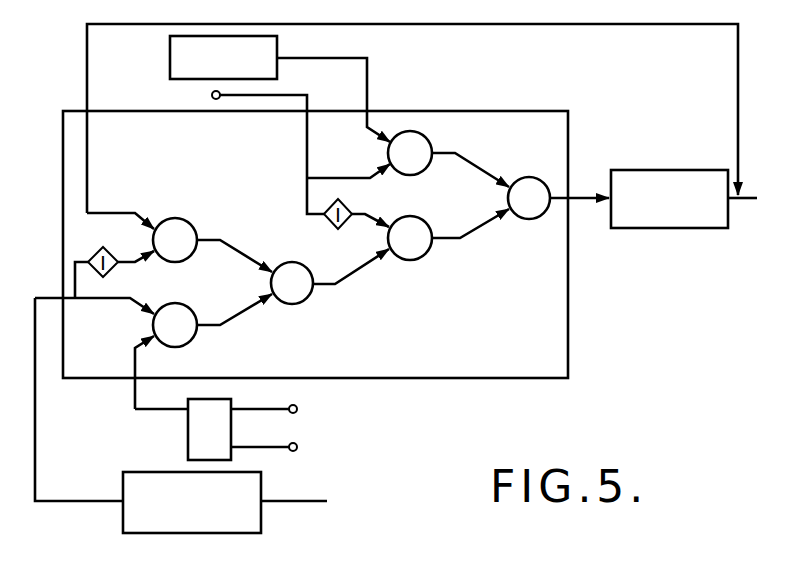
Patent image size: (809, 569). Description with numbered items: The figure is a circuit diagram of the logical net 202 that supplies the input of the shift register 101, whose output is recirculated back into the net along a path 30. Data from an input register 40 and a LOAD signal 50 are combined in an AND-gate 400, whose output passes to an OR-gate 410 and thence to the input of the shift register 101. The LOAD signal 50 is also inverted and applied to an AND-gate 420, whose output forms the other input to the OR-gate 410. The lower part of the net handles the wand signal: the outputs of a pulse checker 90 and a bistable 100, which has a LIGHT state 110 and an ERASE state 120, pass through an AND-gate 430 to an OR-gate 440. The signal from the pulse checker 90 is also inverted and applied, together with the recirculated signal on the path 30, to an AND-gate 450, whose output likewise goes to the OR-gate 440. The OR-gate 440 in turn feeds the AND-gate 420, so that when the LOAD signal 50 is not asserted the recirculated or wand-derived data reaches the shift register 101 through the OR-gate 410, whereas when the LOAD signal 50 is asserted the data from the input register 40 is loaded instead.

The path 30 is at (86, 70).
The input register 40 is at (170, 41).
The LOAD signal 50 is at (222, 92).
The pulse checker 90 is at (123, 512).
The bistable 100 is at (188, 441).
The shift register 101 is at (643, 168).
The LIGHT state 110 is at (291, 404).
The ERASE state 120 is at (296, 452).
The logical net 202 is at (491, 111).
The AND-gate 400 is at (445, 137).
The OR-gate 410 is at (553, 161).
The AND-gate 420 is at (428, 222).
The AND-gate 430 is at (190, 338).
The OR-gate 440 is at (300, 303).
The AND-gate 450 is at (190, 222).